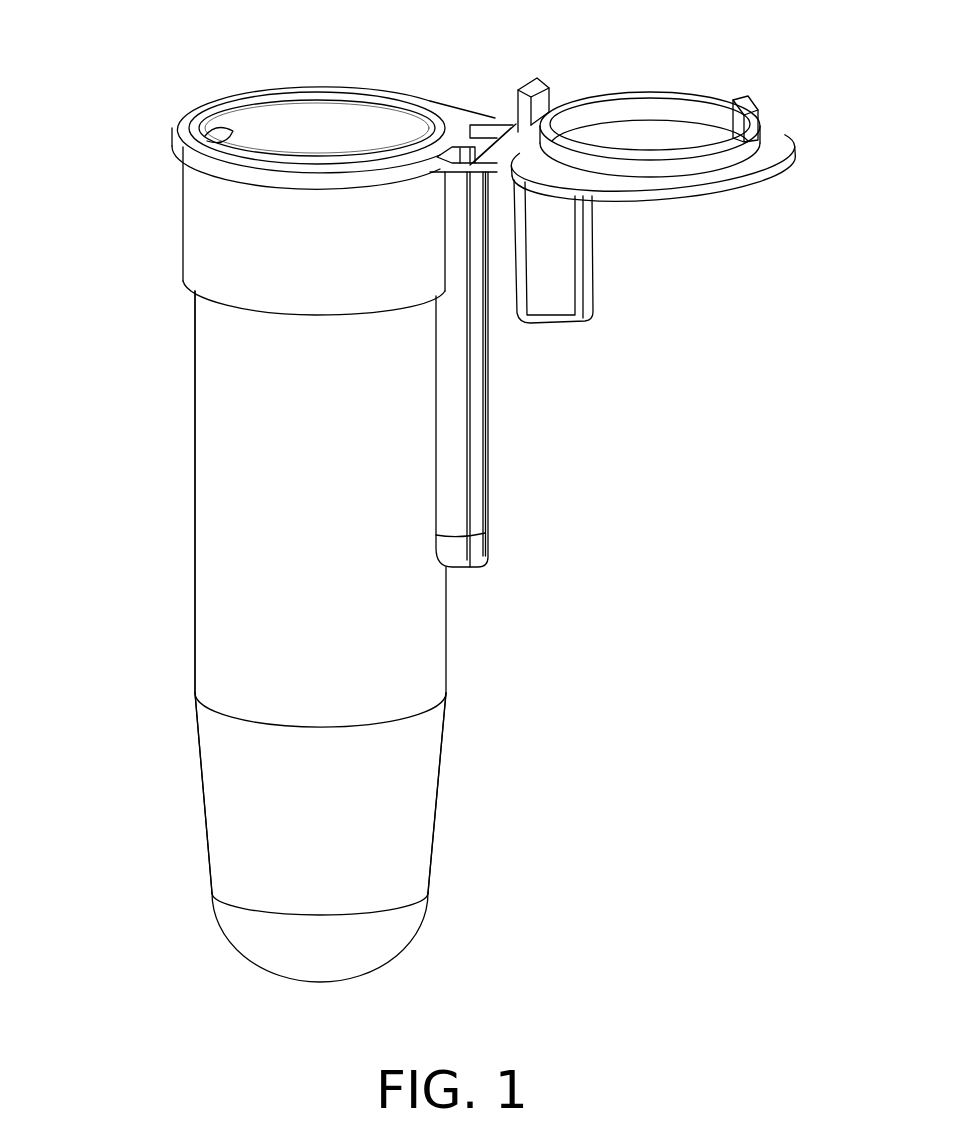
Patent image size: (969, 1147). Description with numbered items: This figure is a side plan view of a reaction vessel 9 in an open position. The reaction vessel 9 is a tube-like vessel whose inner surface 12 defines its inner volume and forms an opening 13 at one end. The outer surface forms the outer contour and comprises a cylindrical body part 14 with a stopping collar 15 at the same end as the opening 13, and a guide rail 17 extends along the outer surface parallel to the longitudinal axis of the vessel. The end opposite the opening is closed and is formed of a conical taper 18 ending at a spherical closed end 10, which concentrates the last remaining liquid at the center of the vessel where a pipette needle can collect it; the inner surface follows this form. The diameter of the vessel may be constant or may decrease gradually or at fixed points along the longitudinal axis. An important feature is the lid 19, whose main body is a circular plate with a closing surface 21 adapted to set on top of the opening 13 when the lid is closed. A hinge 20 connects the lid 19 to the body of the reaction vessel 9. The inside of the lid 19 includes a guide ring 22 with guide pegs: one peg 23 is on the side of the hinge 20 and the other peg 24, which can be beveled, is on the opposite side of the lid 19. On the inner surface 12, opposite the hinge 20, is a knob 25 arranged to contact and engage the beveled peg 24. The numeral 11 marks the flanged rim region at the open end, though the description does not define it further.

The reaction vessel 9 is at (468, 655).
The spherical closed end 10 is at (230, 913).
The tube flange 11 is at (172, 135).
The inner surface 12 is at (313, 137).
The opening 13 is at (267, 82).
The cylindrical body part 14 is at (212, 433).
The stopping collar 15 is at (193, 240).
The guide rail 17 is at (480, 470).
The conical taper 18 is at (413, 848).
The lid 19 is at (690, 222).
The hinge 20 is at (492, 120).
The closing surface 21 is at (771, 140).
The guide ring 22 is at (665, 90).
The guide peg 23 is at (518, 92).
The beveled peg 24 is at (737, 100).
The knob 25 is at (220, 136).